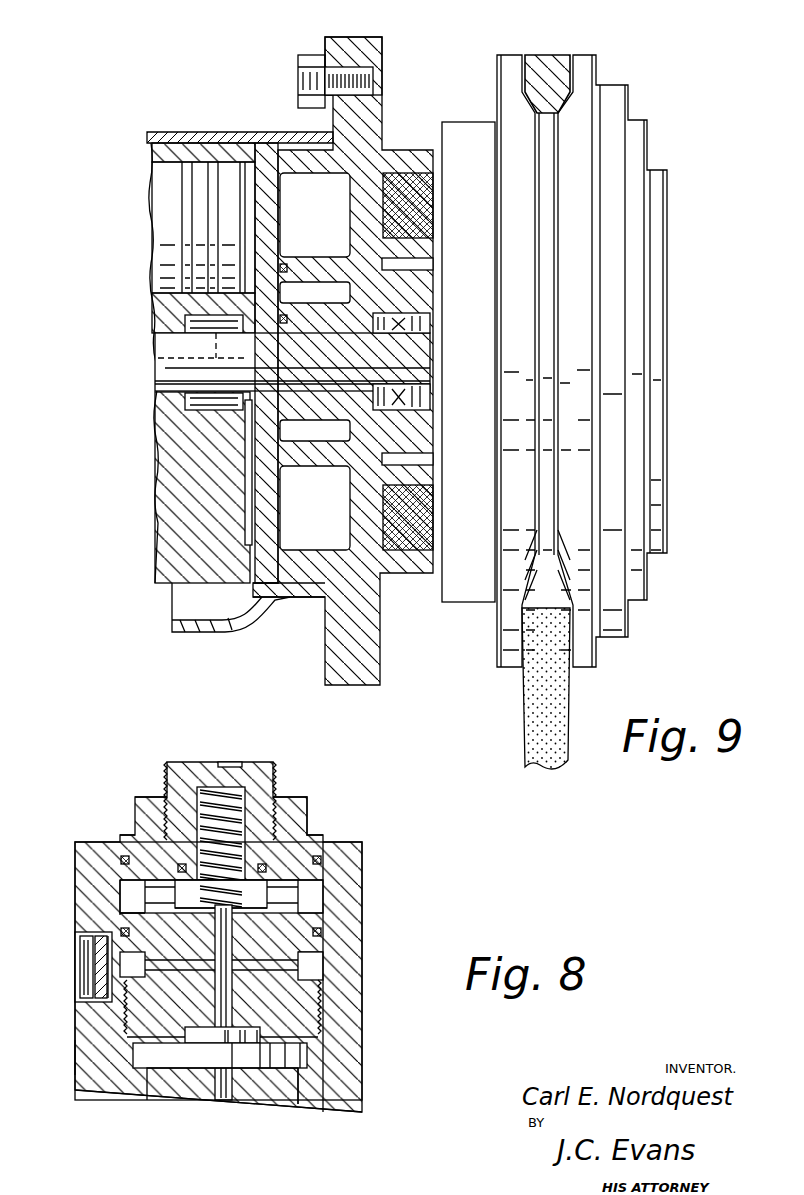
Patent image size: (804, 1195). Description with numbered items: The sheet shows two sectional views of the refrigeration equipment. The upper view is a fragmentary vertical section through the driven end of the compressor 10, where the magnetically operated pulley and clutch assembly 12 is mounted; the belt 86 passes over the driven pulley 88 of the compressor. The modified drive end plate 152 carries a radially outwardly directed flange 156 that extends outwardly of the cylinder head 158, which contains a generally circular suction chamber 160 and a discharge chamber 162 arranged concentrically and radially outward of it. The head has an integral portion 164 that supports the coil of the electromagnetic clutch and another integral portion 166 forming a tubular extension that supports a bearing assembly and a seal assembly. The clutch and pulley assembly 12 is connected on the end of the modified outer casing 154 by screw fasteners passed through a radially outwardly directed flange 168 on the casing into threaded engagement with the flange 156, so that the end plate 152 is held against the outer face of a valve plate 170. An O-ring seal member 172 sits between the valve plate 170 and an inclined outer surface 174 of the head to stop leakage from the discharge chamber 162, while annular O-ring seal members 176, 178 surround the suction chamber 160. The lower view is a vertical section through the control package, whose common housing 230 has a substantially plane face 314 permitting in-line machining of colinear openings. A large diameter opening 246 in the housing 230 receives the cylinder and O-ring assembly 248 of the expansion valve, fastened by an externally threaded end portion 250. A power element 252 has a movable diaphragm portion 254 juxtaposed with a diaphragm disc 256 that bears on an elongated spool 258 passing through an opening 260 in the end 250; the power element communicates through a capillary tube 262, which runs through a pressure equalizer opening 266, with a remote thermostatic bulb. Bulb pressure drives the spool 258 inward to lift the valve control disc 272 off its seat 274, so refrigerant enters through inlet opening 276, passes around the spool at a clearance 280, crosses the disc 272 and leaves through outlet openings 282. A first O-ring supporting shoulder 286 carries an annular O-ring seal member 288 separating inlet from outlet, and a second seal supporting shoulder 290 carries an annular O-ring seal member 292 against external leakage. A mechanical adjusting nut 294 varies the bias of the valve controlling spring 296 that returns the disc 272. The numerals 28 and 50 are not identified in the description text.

In FIG. 9, the compressor unit 10 is at (158, 132).
In FIG. 9, the magnetically operated pulley and clutch assembly 12 is at (628, 101).
In FIG. 8, the valve unit 28 is at (103, 1097).
In FIG. 8, the control valve 50 is at (140, 797).
In FIG. 9, the belt 86 is at (550, 748).
In FIG. 9, the driven pulley 88 is at (584, 82).
In FIG. 9, the drive end plate 152 is at (383, 650).
In FIG. 9, the outer casing 154 is at (193, 131).
In FIG. 9, the radially outwardly directed flange 156 is at (357, 55).
In FIG. 9, the cylinder head 158 is at (313, 570).
In FIG. 9, the suction chamber 160 is at (322, 301).
In FIG. 9, the discharge chamber 162 is at (320, 203).
In FIG. 9, the integral portion 164 is at (405, 160).
In FIG. 9, the integral portion forming a tubular extension 166 is at (410, 293).
In FIG. 9, the radially outwardly directed flange 168 is at (330, 52).
In FIG. 9, the valve plate 170 is at (268, 570).
In FIG. 9, the O-ring seal member 172 is at (287, 584).
In FIG. 9, the inclined outer surface 174 is at (290, 152).
In FIG. 9, the annular O-ring seal member 176 is at (284, 266).
In FIG. 9, the annular O-ring seal member 178 is at (284, 323).
In FIG. 8, the common housing 230 is at (85, 1078).
In FIG. 8, the large diameter opening 246 is at (120, 890).
In FIG. 8, the cylinder and O-ring assembly 248 is at (295, 800).
In FIG. 8, the externally threaded end portion 250 is at (130, 1010).
In FIG. 8, the power element 252 is at (205, 1070).
In FIG. 8, the movable diaphragm portion 254 is at (323, 1030).
In FIG. 8, the diaphragm disc 256 is at (232, 1045).
In FIG. 8, the elongated spool 258 is at (213, 1033).
In FIG. 8, the opening 260 is at (233, 1012).
In FIG. 8, the capillary tube 262 is at (222, 1102).
In FIG. 8, the pressure equalizer opening 266 is at (293, 1100).
In FIG. 8, the valve control disc 272 is at (120, 918).
In FIG. 8, the seat 274 is at (300, 908).
In FIG. 8, the inlet opening 276 is at (300, 967).
In FIG. 8, the clearance 280 is at (323, 930).
In FIG. 8, the outlet openings 282 is at (267, 890).
In FIG. 8, the first O-ring supporting shoulder 286 is at (325, 916).
In FIG. 8, the annular O-ring seal member 288 is at (80, 950).
In FIG. 8, the second seal supporting shoulder 290 is at (323, 880).
In FIG. 8, the annular O-ring seal member 292 is at (355, 842).
In FIG. 8, the mechanical adjusting nut 294 is at (185, 780).
In FIG. 8, the valve controlling spring 296 is at (225, 800).
In FIG. 8, the plane face 314 is at (75, 1057).